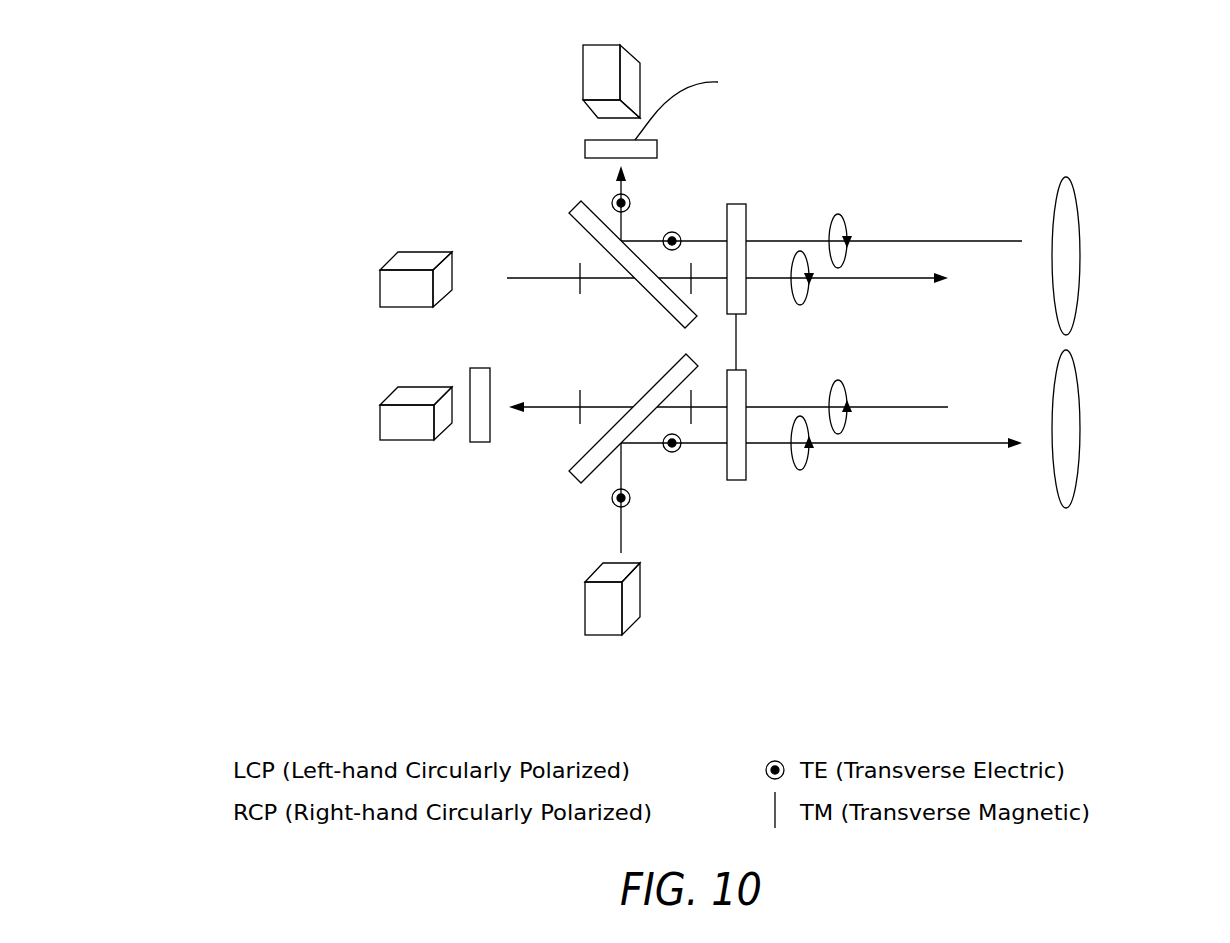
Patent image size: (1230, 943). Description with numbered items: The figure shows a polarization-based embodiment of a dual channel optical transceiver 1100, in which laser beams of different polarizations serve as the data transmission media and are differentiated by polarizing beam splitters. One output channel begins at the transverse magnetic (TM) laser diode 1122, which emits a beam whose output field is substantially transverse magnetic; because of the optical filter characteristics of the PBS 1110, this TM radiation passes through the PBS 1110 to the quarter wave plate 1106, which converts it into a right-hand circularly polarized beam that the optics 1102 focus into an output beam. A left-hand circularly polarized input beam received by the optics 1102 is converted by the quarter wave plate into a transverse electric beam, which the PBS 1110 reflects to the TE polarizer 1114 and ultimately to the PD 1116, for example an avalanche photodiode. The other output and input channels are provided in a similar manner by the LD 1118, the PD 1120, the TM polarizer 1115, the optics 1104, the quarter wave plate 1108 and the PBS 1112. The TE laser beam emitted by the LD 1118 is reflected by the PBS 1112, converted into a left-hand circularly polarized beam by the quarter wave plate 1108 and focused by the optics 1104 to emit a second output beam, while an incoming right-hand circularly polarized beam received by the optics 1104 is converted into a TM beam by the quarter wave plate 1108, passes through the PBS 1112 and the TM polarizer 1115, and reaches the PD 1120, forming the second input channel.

The transceiver 1100 is at (1080, 62).
The optics 1102 is at (1080, 237).
The optics 1104 is at (1080, 408).
The quarter wave plate 1106 is at (748, 218).
The quarter wave plate 1108 is at (750, 468).
The polarizing beam splitter 1110 is at (662, 308).
The polarizing beam splitter 1112 is at (652, 386).
The TE polarizer 1114 is at (585, 148).
The TM polarizer 1115 is at (480, 445).
The PD 1116 is at (633, 55).
The LD 1118 is at (643, 588).
The PD 1120 is at (405, 443).
The transverse magnetic (TM) laser diode 1122 is at (408, 312).